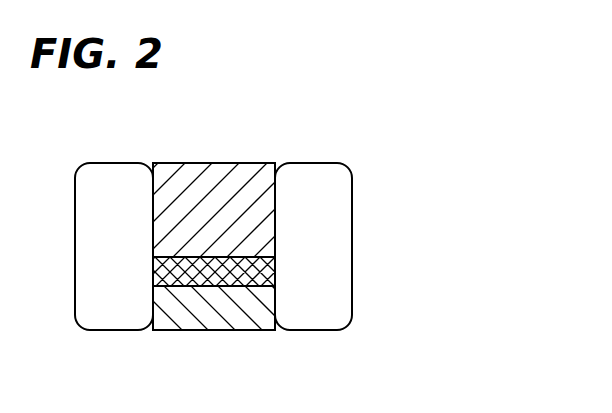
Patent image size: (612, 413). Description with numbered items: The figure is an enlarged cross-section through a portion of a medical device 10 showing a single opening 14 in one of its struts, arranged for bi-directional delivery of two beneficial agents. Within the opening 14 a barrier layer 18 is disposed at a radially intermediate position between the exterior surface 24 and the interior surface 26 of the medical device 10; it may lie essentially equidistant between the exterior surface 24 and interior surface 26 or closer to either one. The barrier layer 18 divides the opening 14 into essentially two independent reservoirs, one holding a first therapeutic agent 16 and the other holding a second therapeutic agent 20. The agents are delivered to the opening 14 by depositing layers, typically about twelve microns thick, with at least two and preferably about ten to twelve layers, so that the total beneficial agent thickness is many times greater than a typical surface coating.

The medical device 10 is at (303, 223).
The opening 14 is at (264, 223).
The first therapeutic agent 16 is at (213, 178).
The barrier layer 18 is at (273, 276).
The second therapeutic agent 20 is at (230, 310).
The exterior surface 24 is at (314, 163).
The interior surface 26 is at (308, 330).